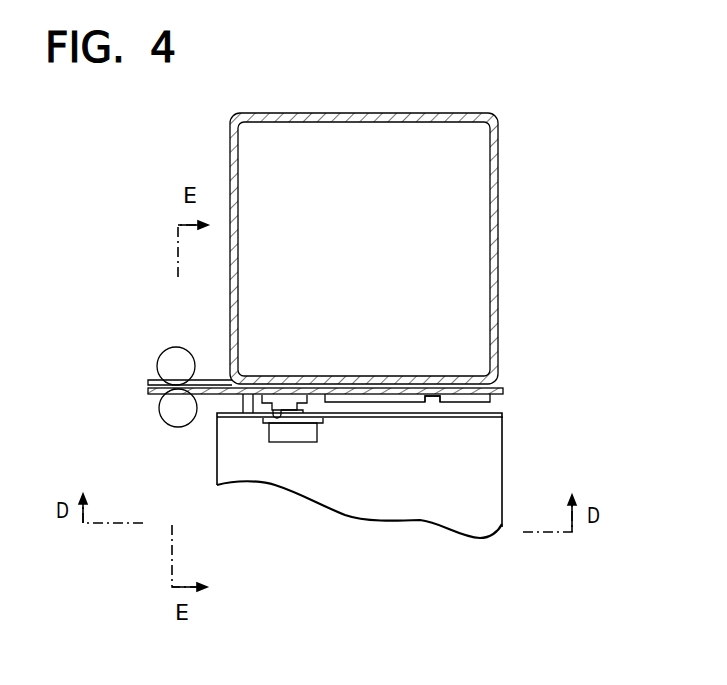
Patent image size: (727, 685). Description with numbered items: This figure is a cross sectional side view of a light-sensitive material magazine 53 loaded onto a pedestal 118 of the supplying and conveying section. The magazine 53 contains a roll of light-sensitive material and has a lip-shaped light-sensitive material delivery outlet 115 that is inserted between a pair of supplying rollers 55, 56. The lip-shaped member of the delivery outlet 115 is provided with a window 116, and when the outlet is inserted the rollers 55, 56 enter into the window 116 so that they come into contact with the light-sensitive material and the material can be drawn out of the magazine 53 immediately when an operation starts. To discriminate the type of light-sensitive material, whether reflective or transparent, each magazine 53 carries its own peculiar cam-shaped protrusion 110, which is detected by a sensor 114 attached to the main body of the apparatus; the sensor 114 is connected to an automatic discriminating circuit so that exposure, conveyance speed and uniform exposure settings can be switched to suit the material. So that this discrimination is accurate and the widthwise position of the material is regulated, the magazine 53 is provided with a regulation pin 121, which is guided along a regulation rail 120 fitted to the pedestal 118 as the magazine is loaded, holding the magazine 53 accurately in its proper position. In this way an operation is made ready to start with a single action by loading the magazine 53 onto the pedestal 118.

The magazine 53 is at (370, 113).
The supplying roller 55 is at (160, 418).
The supplying roller 56 is at (162, 352).
The cam-shaped protrusion 110 is at (280, 400).
The sensor 114 is at (298, 442).
The light-sensitive material delivery outlet 115 is at (197, 379).
The window 116 is at (203, 396).
The pedestal 118 is at (490, 446).
The regulation rail 120 is at (503, 398).
The regulation pin 121 is at (435, 405).